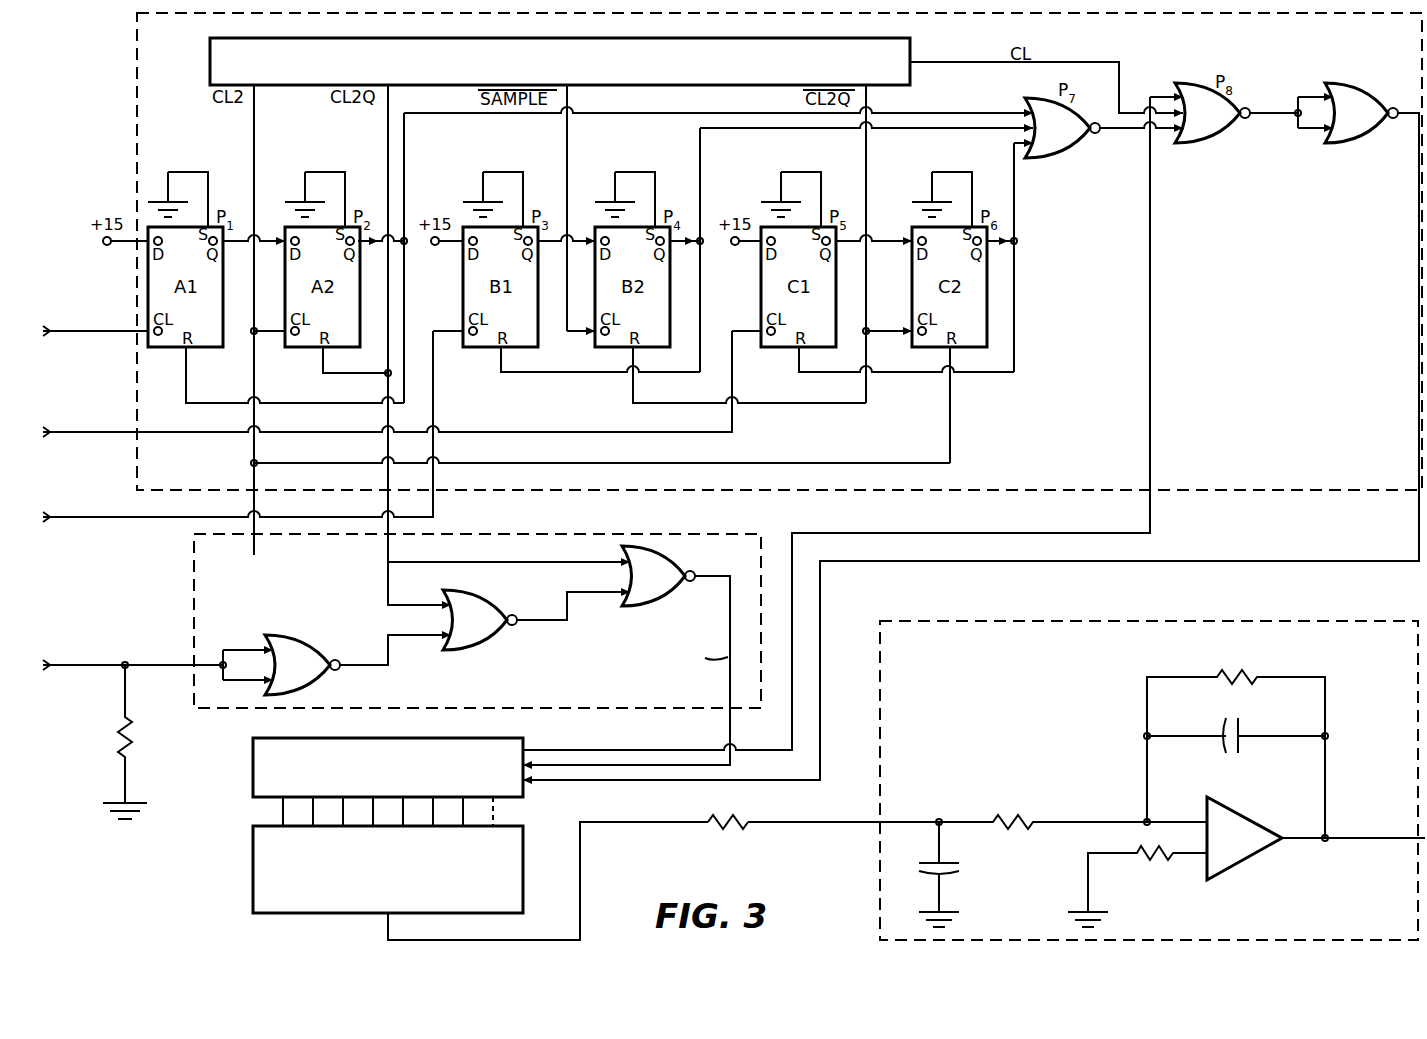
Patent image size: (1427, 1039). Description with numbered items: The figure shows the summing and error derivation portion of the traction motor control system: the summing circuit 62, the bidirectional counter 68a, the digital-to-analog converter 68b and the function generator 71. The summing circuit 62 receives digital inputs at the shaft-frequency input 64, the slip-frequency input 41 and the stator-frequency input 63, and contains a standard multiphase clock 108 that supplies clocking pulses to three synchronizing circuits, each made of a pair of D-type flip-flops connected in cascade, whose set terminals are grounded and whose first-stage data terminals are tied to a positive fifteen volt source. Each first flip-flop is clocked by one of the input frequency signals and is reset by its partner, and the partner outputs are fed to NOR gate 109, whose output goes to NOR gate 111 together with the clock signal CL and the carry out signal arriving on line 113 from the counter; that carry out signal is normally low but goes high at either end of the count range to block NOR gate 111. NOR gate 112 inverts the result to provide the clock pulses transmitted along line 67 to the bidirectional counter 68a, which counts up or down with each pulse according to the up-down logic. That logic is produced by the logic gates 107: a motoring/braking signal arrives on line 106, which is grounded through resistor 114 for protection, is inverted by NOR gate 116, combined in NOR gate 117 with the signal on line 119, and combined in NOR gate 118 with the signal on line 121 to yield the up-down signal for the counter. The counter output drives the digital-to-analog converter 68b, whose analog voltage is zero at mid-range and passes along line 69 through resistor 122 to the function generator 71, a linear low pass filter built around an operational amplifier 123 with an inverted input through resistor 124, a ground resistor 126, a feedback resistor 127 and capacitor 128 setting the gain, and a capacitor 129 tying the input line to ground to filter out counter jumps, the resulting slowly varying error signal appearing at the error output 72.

The summing circuit 62 is at (175, 101).
The multiphase clock 108 is at (913, 49).
The shaft frequency input 64 is at (101, 333).
The slip frequency input 41 is at (105, 435).
The stator frequency input 63 is at (124, 521).
The NOR gate 109 is at (1073, 148).
The NOR gate 111 is at (1222, 133).
The NOR gate 112 is at (1368, 135).
The carry out line 113 is at (1150, 388).
The clock pulse line 67 is at (1095, 563).
The CL2 signal line 121 is at (252, 557).
The CL2QA signal line 119 is at (383, 595).
The logic gates 107 is at (702, 636).
The NOR gate 116 is at (297, 633).
The NOR gate 117 is at (500, 604).
The NOR gate 118 is at (678, 556).
The digital signal line 106 is at (98, 668).
The resistor 114 is at (120, 732).
The bidirectional counter 68a is at (253, 773).
The digital-to-analog converter 68b is at (253, 865).
The line 69 is at (840, 821).
The resistor 122 is at (743, 832).
The function generator 71 is at (953, 671).
The capacitor 129 is at (945, 868).
The resistor 124 is at (1025, 818).
The feedback resistor 127 is at (1228, 672).
The capacitor 128 is at (1226, 735).
The ground resistor 126 is at (1150, 862).
The operational amplifier 123 is at (1255, 860).
The error signal output 72 is at (1378, 843).